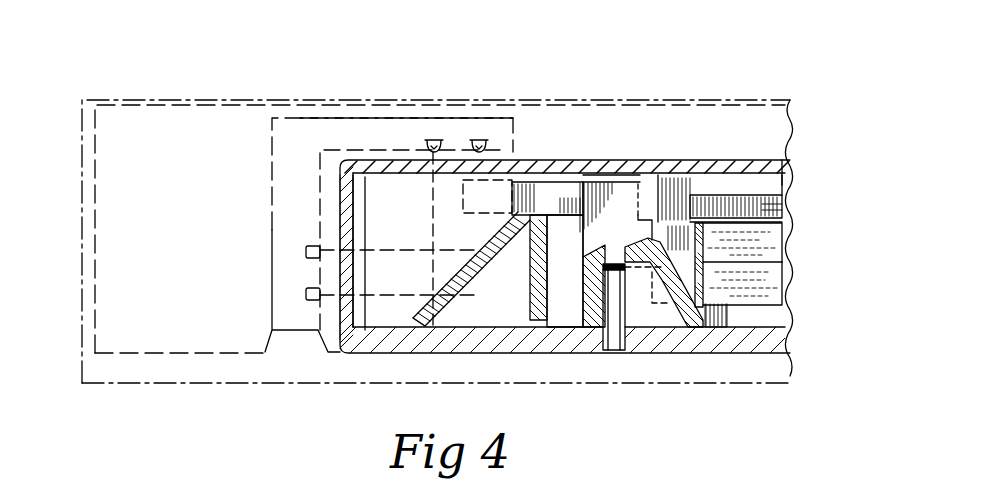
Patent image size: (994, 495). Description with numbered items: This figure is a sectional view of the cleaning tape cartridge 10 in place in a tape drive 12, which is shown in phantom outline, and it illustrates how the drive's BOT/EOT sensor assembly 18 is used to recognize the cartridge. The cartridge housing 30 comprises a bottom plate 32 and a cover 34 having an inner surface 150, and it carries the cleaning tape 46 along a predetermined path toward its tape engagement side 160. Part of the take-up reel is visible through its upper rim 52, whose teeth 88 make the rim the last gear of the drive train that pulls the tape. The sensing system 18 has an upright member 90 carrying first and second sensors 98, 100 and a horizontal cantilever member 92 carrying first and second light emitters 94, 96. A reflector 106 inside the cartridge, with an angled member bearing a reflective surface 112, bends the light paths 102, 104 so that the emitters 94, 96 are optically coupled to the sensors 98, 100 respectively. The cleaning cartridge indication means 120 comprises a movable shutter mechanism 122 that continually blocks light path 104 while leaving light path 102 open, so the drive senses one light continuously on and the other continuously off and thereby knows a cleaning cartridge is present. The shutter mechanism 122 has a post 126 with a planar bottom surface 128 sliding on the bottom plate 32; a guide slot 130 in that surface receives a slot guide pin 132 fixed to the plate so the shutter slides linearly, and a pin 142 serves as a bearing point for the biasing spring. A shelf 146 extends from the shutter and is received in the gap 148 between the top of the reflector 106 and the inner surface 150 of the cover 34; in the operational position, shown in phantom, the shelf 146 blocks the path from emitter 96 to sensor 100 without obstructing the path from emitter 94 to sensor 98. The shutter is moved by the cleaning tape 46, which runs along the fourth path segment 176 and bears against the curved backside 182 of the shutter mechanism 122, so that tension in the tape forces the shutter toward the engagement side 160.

The cleaning tape cartridge 10 is at (628, 125).
The tape drive 12 is at (70, 107).
The BOT/EOT sensor assembly 18 is at (258, 146).
The housing 30 is at (330, 178).
The bottom plate 32 is at (780, 337).
The cover 34 is at (785, 162).
The cleaning tape 46 is at (725, 297).
The upper rim 52 is at (745, 195).
The teeth 88 is at (775, 192).
The upright member 90 is at (272, 213).
The horizontal cantilever member 92 is at (378, 117).
The first light emitter 94 is at (433, 140).
The second light emitter 96 is at (472, 185).
The first sensor 98 is at (306, 294).
The second sensor 100 is at (306, 252).
The first light path 102 is at (380, 295).
The second light path 104 is at (380, 250).
The reflector 106 is at (445, 208).
The reflective surface 112 is at (420, 318).
The cleaning cartridge indication means 120 is at (700, 145).
The shutter mechanism 122 is at (651, 173).
The post 126 is at (585, 265).
The bottom surface 128 is at (594, 327).
The guide slot 130 is at (662, 322).
The slot guide pin 132 is at (617, 327).
The pin 142 is at (786, 182).
The shelf 146 is at (500, 157).
The gap 148 is at (583, 175).
The inner surface 150 is at (372, 178).
The tape engagement side 160 is at (330, 206).
The fourth path segment 176 is at (740, 246).
The backside 182 is at (705, 262).